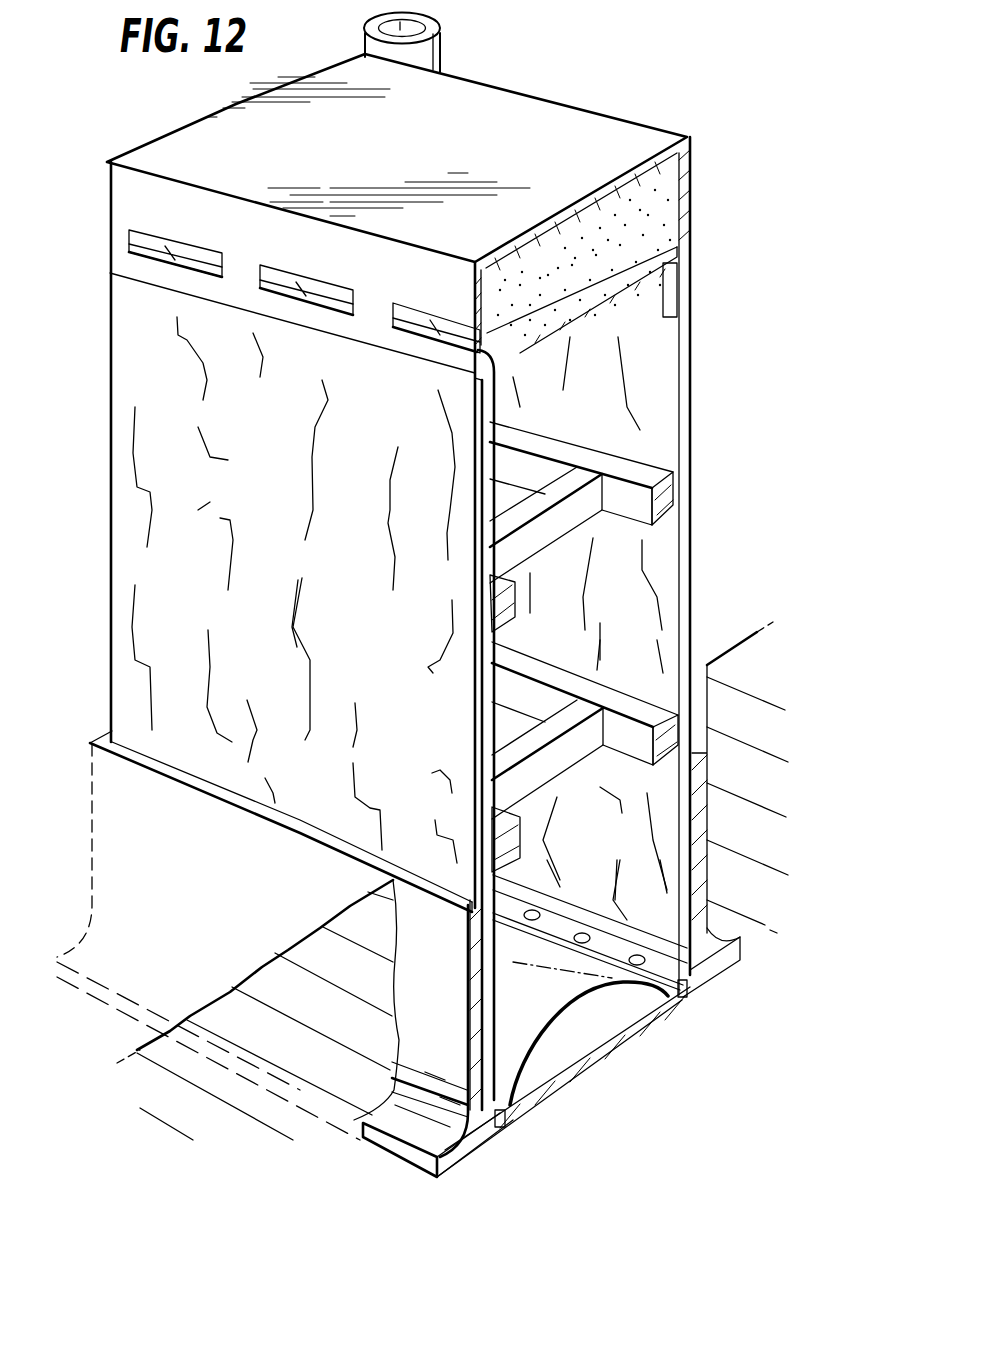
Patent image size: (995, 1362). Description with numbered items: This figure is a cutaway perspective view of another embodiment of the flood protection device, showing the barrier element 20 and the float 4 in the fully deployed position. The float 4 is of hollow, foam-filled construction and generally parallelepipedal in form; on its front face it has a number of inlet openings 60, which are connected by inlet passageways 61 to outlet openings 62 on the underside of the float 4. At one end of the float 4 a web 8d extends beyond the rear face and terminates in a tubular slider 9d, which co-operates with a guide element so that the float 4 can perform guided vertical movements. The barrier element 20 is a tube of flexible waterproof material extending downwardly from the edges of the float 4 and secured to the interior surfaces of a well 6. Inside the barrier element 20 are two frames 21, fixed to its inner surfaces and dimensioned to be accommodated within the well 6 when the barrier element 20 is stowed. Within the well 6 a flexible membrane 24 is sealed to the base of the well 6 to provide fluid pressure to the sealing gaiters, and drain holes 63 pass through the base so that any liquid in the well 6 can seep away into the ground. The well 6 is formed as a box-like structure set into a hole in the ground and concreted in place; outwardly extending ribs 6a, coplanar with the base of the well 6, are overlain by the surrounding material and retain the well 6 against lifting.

The float 4 is at (392, 163).
The web 8d is at (381, 60).
The tubular slider 9d is at (437, 58).
The inlet opening 60 is at (160, 247).
The inlet passageway 61 is at (470, 340).
The outlet opening 62 is at (507, 364).
The barrier element 20 is at (212, 500).
The frame 21 is at (643, 472).
The flexible membrane 24 is at (578, 1010).
The drain hole 63 is at (508, 1120).
The outwardly extending rib 6a is at (408, 1153).
The well 6 is at (705, 1023).